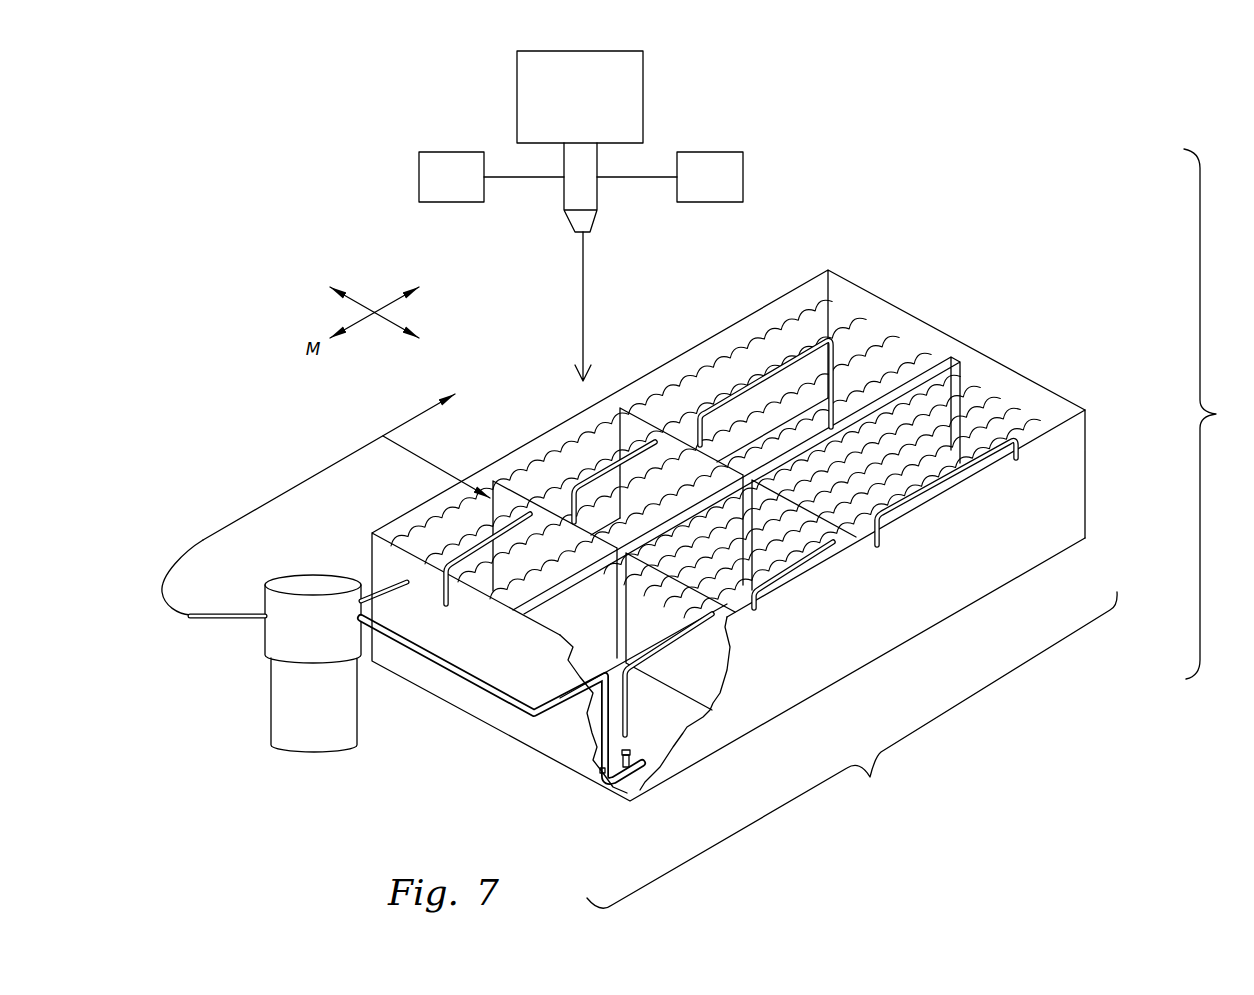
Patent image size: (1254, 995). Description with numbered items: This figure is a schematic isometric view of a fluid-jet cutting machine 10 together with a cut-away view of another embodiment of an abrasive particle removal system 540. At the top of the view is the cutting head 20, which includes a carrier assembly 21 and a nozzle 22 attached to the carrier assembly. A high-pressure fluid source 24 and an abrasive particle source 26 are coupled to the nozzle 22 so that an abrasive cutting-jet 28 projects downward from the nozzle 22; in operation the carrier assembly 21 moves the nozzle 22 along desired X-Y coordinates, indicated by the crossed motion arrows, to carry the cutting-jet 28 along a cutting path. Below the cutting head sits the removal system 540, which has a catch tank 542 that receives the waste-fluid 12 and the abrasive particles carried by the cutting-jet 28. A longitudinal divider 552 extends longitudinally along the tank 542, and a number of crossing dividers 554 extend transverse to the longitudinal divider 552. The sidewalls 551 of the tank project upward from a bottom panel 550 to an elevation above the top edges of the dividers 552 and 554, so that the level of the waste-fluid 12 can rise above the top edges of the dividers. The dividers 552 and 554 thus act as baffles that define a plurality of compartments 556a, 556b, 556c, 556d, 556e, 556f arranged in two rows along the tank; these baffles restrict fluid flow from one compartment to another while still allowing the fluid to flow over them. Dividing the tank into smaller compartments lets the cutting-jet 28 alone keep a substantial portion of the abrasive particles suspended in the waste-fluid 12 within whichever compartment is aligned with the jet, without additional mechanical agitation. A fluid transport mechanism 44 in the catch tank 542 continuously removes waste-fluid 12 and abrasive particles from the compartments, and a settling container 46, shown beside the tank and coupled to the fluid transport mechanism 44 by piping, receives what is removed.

The fluid-jet cutting machine 10 is at (1215, 414).
The waste-fluid 12 is at (372, 528).
The cutting head 20 is at (490, 117).
The carrier assembly 21 is at (643, 80).
The nozzle 22 is at (564, 200).
The high-pressure fluid source 24 is at (419, 177).
The abrasive particle source 26 is at (743, 177).
The abrasive cutting-jet 28 is at (583, 290).
The fluid transport mechanism 44 is at (655, 742).
The settling container 46 is at (271, 712).
The abrasive particle removal system 540 is at (852, 750).
The catch tank 542 is at (1078, 485).
The bottom panel 550 is at (750, 535).
The sidewalls 551 is at (935, 326).
The longitudinal divider 552 is at (560, 602).
The crossing dividers 554 is at (735, 463).
The compartment 556a is at (496, 530).
The compartment 556b is at (612, 454).
The compartment 556c is at (756, 378).
The compartment 556d is at (906, 477).
The compartment 556e is at (772, 556).
The compartment 556f is at (690, 613).